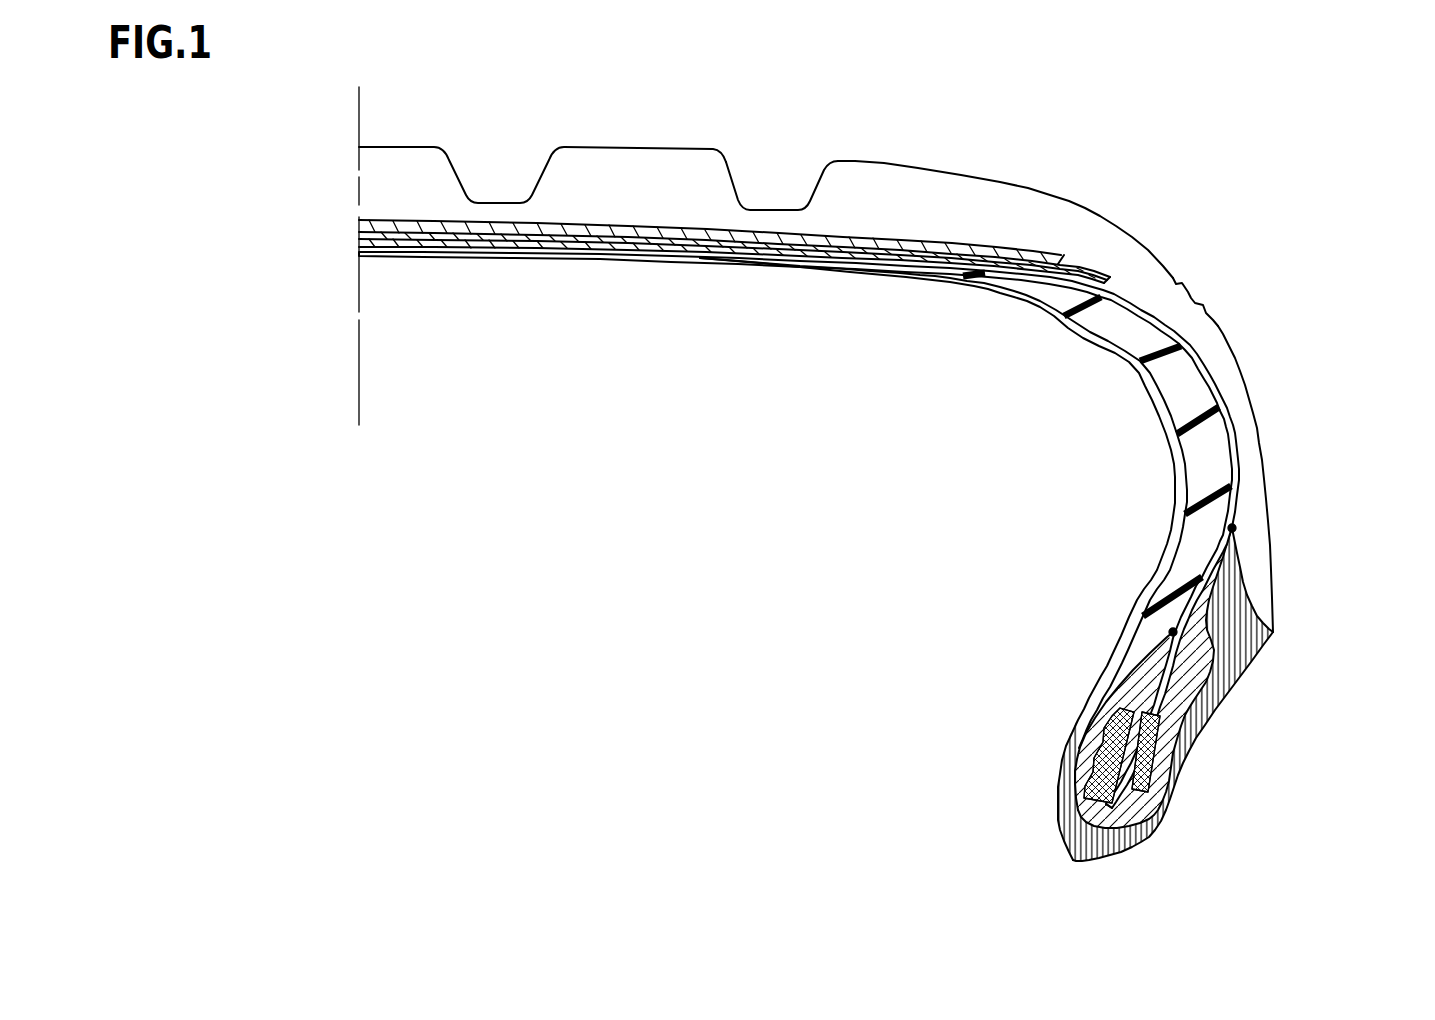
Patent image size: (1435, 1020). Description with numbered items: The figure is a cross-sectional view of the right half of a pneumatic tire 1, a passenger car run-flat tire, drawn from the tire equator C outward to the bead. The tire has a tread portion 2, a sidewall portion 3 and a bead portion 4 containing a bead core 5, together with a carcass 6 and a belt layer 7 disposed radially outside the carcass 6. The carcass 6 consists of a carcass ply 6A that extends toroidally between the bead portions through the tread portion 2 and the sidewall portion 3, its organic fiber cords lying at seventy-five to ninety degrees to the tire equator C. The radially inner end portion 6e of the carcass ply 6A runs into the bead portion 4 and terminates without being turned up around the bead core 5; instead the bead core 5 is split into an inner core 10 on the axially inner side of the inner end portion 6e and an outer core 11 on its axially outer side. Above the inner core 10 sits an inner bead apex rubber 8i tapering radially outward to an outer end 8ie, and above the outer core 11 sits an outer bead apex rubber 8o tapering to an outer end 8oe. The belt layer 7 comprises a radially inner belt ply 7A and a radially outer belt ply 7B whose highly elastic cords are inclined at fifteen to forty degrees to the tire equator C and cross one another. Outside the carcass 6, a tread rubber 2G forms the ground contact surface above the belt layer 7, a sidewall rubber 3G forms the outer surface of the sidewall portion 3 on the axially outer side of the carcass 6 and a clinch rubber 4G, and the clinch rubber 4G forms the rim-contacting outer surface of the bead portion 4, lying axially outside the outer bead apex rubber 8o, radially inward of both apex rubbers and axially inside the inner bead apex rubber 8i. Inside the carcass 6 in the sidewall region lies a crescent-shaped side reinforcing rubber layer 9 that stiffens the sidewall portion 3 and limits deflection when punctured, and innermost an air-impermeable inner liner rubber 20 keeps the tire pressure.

The pneumatic tire 1 is at (1205, 178).
The tread portion 2 is at (695, 145).
The tread rubber 2G is at (622, 170).
The sidewall portion 3 is at (1308, 467).
The sidewall rubber 3G is at (1243, 403).
The bead portion 4 is at (1197, 759).
The clinch rubber 4G is at (1208, 681).
The bead core 5 is at (1278, 856).
The carcass 6 is at (1205, 363).
The carcass ply 6A is at (799, 530).
The inner end portion of the carcass ply 6e is at (1100, 833).
The belt layer 7 is at (1037, 111).
The inner belt ply 7A is at (947, 255).
The outer belt ply 7B is at (870, 228).
The inner bead apex rubber 8i is at (1127, 694).
The outer end of the inner bead apex rubber 8ie is at (1170, 632).
The outer bead apex rubber 8o is at (1199, 637).
The outer end of the outer bead apex rubber 8oe is at (1249, 531).
The side reinforcing rubber layer 9 is at (1178, 384).
The inner core 10 is at (1120, 775).
The outer core 11 is at (1146, 766).
The inner liner rubber 20 is at (1176, 479).
The tire equator C is at (358, 240).